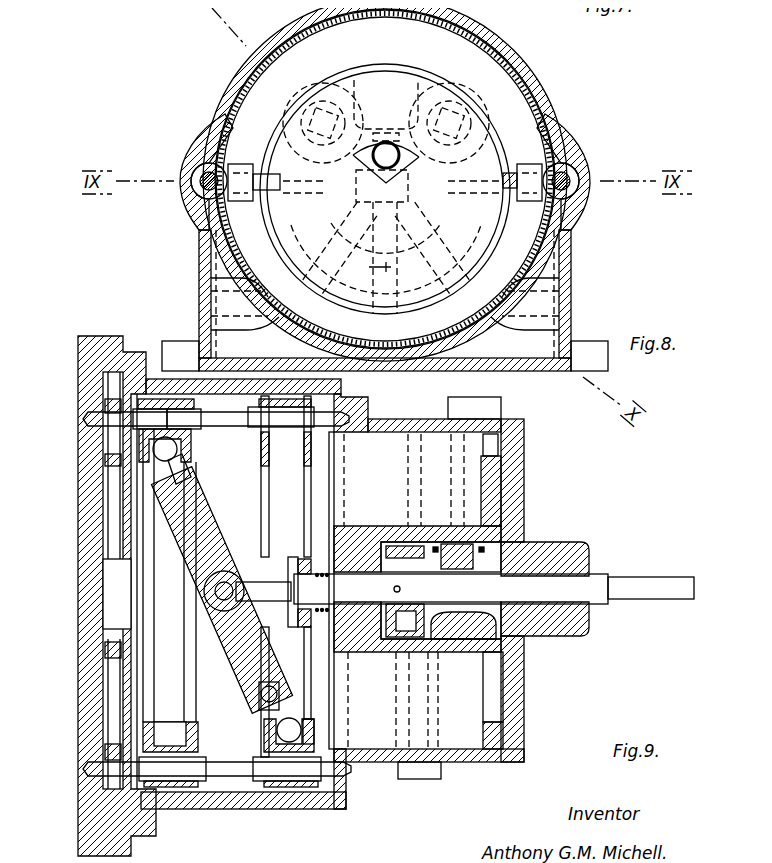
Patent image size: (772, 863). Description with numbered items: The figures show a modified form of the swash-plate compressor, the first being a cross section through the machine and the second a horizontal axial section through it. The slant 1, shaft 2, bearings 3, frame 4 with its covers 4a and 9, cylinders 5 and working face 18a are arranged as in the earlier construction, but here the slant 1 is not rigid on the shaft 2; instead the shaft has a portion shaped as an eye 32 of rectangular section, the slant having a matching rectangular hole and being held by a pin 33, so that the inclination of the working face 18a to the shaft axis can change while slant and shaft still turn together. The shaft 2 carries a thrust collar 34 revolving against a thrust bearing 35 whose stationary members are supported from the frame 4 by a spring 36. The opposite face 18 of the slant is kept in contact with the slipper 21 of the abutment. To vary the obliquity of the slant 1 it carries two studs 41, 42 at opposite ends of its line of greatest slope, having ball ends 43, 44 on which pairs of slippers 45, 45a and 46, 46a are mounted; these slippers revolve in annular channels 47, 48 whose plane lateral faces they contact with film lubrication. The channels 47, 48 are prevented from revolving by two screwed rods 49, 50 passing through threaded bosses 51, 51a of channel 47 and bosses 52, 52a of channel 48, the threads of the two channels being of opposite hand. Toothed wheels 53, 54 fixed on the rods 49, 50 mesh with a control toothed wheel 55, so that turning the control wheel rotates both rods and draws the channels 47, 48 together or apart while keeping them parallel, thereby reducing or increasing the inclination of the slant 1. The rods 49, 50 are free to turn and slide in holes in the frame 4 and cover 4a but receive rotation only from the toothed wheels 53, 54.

In FIG. 9, the slant 1 is at (188, 542).
In FIG. 9, the shaft 2 is at (494, 589).
In FIG. 9, the bearings 3 is at (346, 563).
In FIG. 9, the frame 4 is at (392, 428).
In FIG. 9, the cover 4a is at (78, 433).
In FIG. 8, the cylinders 5 is at (413, 92).
In FIG. 9, the cover 9 is at (522, 495).
In FIG. 9, the opposite face of the slant 18 is at (158, 575).
In FIG. 9, the working face 18a is at (216, 520).
In FIG. 8, the slipper 21 is at (368, 152).
In FIG. 8, the eye 32 is at (402, 192).
In FIG. 9, the eye 32 is at (218, 612).
In FIG. 8, the pin 33 is at (380, 264).
In FIG. 9, the pin 33 is at (233, 592).
In FIG. 9, the thrust collar 34 is at (290, 560).
In FIG. 9, the thrust bearing 35 is at (297, 598).
In FIG. 9, the spring 36 is at (318, 562).
In FIG. 9, the stud 41 is at (190, 480).
In FIG. 9, the stud 42 is at (260, 698).
In FIG. 9, the ball end 43 is at (176, 452).
In FIG. 9, the ball end 44 is at (266, 740).
In FIG. 9, the slipper 45 is at (150, 418).
In FIG. 9, the slipper 45a is at (184, 418).
In FIG. 9, the slipper 46 is at (276, 728).
In FIG. 9, the slipper 46a is at (312, 735).
In FIG. 9, the annular channel 47 is at (156, 738).
In FIG. 9, the annular channel 48 is at (286, 576).
In FIG. 9, the screwed rod 49 is at (233, 424).
In FIG. 9, the screwed rod 50 is at (233, 778).
In FIG. 9, the boss 51 is at (196, 418).
In FIG. 9, the boss 51a is at (170, 790).
In FIG. 9, the boss 52 is at (348, 402).
In FIG. 9, the boss 52a is at (325, 798).
In FIG. 9, the toothed wheel 53 is at (105, 393).
In FIG. 9, the toothed wheel 54 is at (110, 740).
In FIG. 9, the control toothed wheel 55 is at (110, 493).